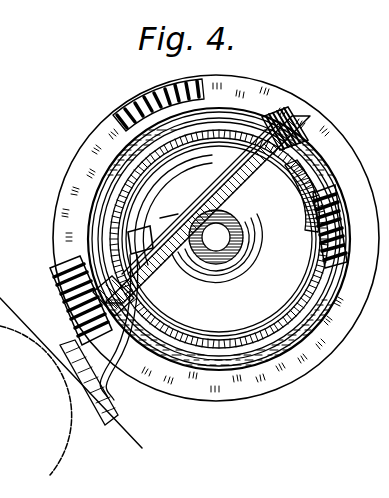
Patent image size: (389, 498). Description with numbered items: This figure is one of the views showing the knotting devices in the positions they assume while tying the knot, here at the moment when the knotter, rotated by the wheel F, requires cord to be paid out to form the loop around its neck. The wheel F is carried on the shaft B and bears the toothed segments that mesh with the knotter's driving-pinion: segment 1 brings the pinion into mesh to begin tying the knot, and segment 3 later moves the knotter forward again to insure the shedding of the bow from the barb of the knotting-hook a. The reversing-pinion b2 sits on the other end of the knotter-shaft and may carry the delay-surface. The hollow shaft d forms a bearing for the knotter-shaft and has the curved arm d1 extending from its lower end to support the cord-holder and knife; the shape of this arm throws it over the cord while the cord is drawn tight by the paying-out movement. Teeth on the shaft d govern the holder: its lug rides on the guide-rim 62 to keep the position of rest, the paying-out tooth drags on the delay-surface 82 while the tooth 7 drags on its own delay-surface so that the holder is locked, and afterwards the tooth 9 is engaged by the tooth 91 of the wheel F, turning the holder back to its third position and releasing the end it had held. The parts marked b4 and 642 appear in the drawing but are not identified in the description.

The segment of wheel F 3 is at (141, 93).
The tooth on shaft d 7 is at (244, 152).
The wheel F is at (219, 239).
The guide-rim 62 is at (184, 150).
The shaft B is at (217, 246).
The shaft d is at (201, 198).
The tooth of shaft d 9 is at (207, 212).
The tooth of wheel F 91 is at (164, 209).
The delay-surface 82 is at (140, 240).
The toothed head block b4 is at (313, 228).
The reversing-pinion b2 is at (296, 196).
The toothed segment 642 is at (322, 249).
The segment of wheel F 1 is at (62, 300).
The knotting-hook a is at (60, 342).
The curved arm d1 is at (158, 423).